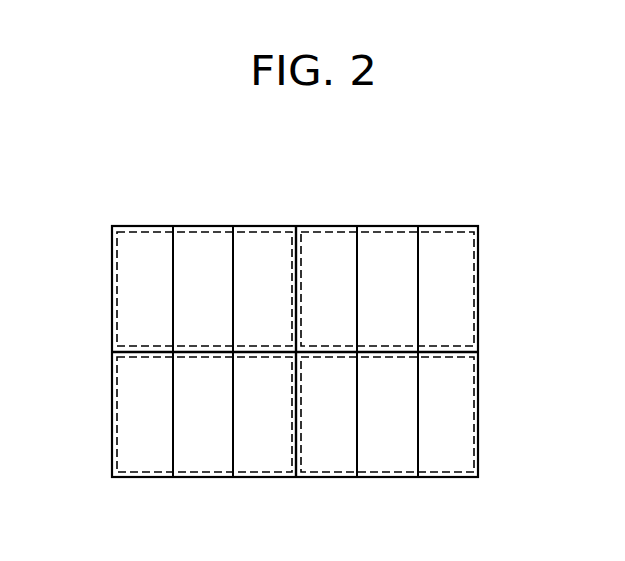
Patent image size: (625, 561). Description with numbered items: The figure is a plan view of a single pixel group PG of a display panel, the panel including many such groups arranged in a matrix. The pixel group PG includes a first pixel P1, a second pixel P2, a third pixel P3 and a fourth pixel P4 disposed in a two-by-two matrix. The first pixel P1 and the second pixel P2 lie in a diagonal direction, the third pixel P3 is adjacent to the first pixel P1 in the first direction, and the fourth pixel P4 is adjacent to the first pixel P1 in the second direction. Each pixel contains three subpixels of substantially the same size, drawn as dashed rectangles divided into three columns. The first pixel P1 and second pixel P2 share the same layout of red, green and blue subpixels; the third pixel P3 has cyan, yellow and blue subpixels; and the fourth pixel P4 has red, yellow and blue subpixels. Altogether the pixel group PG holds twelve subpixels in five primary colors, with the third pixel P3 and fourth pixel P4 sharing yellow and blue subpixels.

The pixel group PG is at (276, 200).
The first pixel P1 is at (112, 288).
The second pixel P2 is at (478, 413).
The third pixel P3 is at (478, 288).
The fourth pixel P4 is at (112, 413).